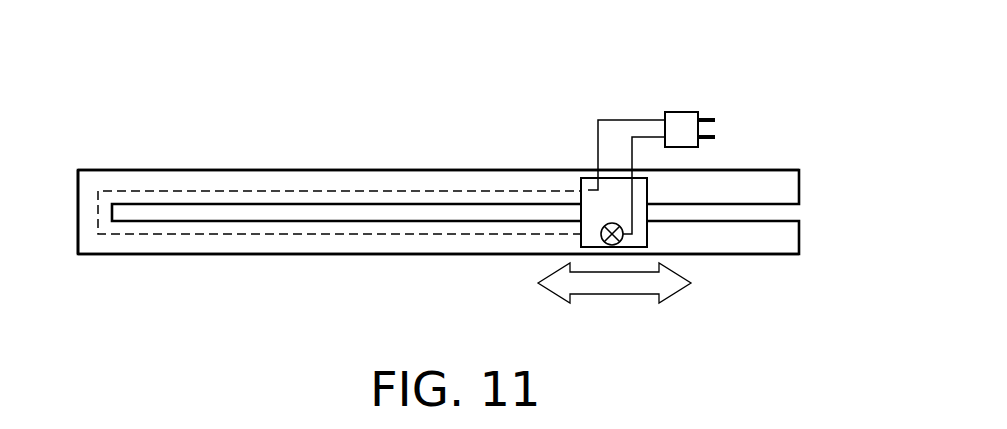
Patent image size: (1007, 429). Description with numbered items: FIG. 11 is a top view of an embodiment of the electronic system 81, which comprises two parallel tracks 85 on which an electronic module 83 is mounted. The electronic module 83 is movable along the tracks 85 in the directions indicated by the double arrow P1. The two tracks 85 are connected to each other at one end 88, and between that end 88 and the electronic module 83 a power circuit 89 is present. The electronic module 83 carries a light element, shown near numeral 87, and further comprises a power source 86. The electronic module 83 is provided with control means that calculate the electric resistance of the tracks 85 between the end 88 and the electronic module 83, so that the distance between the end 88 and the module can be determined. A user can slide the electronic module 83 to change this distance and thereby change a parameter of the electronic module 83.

The electronic system 81 is at (94, 121).
The tracks 85 is at (210, 179).
The power circuit 89 is at (390, 191).
The end 88 is at (92, 218).
The electronic module 83 is at (592, 212).
The power source 86 is at (680, 121).
The light source 87 is at (622, 237).
The double arrow P1 is at (618, 288).